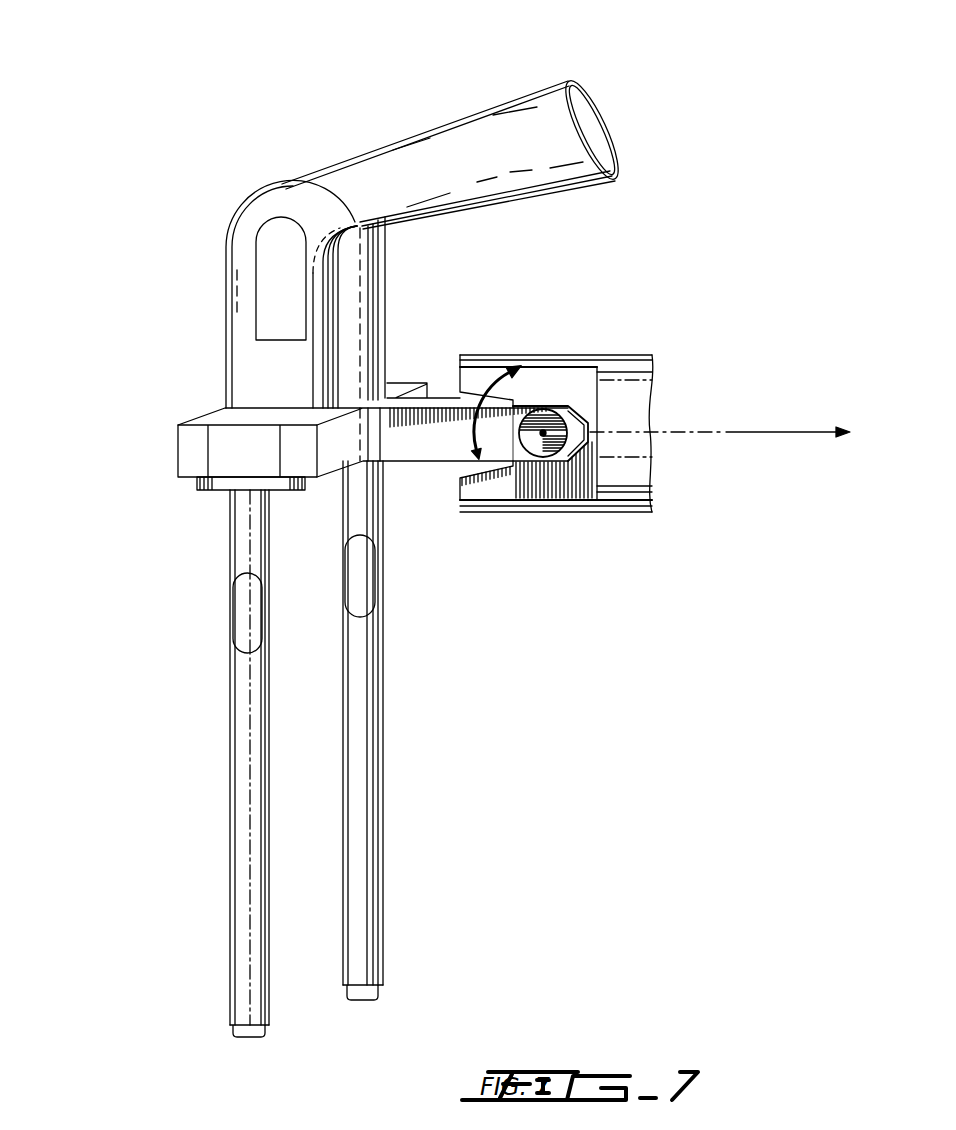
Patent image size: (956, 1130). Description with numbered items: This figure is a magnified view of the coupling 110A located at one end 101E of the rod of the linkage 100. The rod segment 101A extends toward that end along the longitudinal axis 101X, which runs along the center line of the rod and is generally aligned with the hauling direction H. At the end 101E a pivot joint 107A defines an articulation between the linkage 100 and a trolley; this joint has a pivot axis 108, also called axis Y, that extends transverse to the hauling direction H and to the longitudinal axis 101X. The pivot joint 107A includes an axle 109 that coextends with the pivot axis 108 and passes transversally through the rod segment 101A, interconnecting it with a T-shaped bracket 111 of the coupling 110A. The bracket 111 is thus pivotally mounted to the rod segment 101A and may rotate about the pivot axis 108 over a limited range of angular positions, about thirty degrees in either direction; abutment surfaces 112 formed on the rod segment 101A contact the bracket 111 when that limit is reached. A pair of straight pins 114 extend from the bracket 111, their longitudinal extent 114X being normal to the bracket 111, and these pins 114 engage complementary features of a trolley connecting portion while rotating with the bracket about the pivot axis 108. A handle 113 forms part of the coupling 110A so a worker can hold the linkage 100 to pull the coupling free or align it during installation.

The linkage 100 is at (153, 143).
The coupling 110A is at (185, 318).
The handle 113 is at (322, 172).
The bracket 111 is at (190, 455).
The pins 114 is at (240, 665).
The longitudinal extent of the pins 114X is at (247, 973).
The rod segment 101A is at (638, 497).
The end of the rod 101E is at (495, 345).
The abutment surfaces 112 is at (458, 392).
The pivot joint 107A is at (557, 400).
The axle 109 is at (558, 447).
The pivot axis 108 is at (543, 433).
The axis Y is at (540, 435).
The longitudinal axis of the rod 101X is at (680, 433).
The hauling direction H is at (789, 432).